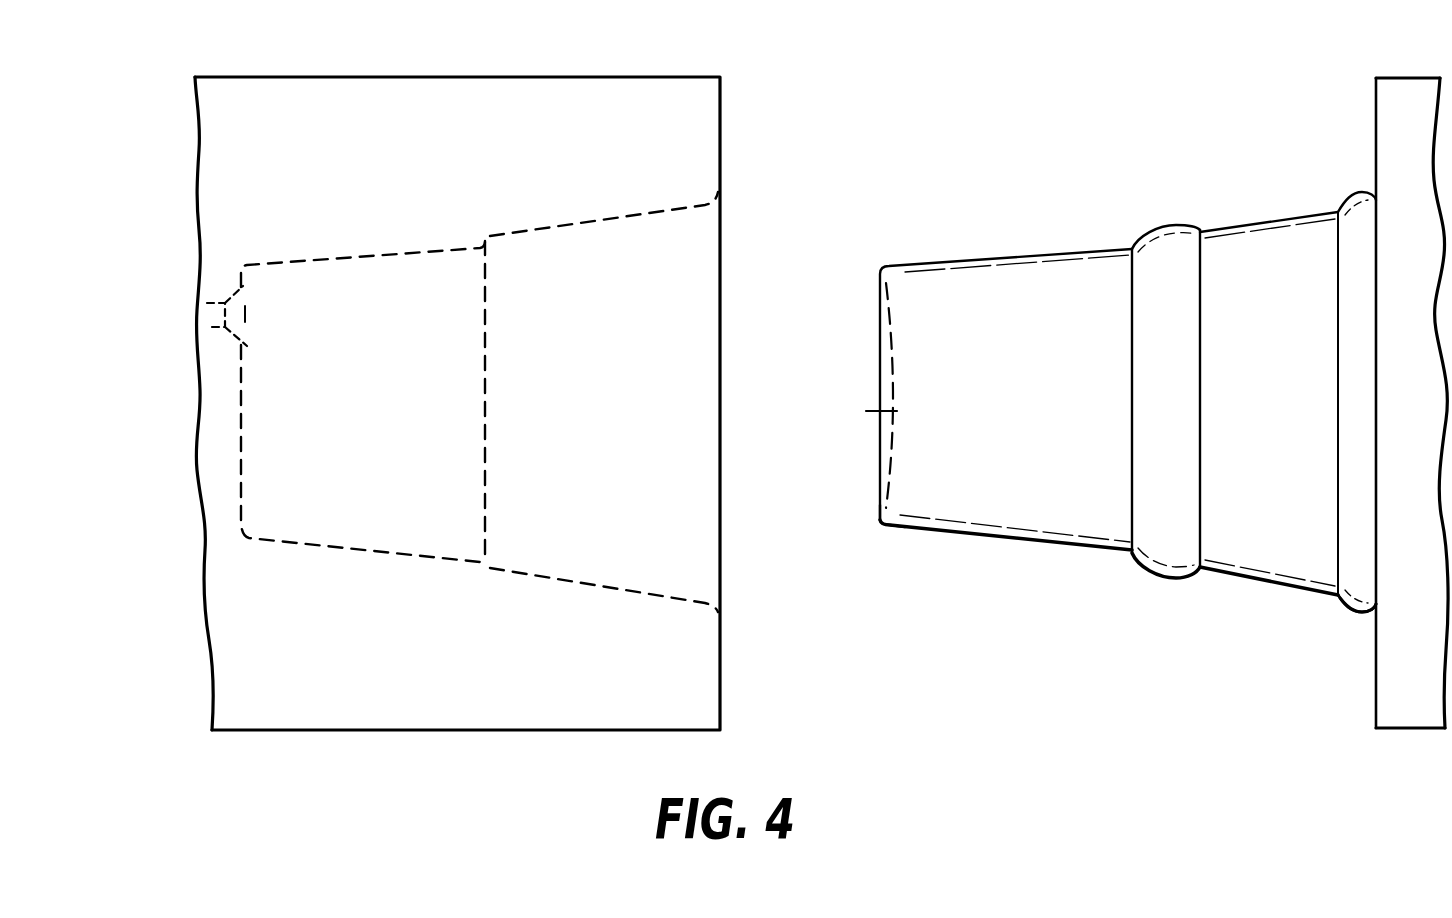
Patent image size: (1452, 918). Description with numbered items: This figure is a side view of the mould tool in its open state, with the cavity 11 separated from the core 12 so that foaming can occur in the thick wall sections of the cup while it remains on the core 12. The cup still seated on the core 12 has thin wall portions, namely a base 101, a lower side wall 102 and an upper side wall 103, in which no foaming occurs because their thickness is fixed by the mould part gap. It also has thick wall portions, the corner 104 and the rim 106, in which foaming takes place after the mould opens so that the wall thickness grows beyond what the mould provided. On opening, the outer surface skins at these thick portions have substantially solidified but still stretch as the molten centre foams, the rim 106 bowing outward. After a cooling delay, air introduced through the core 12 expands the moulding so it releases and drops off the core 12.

The cavity 11 is at (353, 710).
The core 12 is at (1398, 683).
The base 101 is at (862, 408).
The lower side wall 102 is at (1015, 254).
The upper side wall 103 is at (1262, 218).
The corner 104 is at (884, 526).
The rim 106 is at (1362, 611).